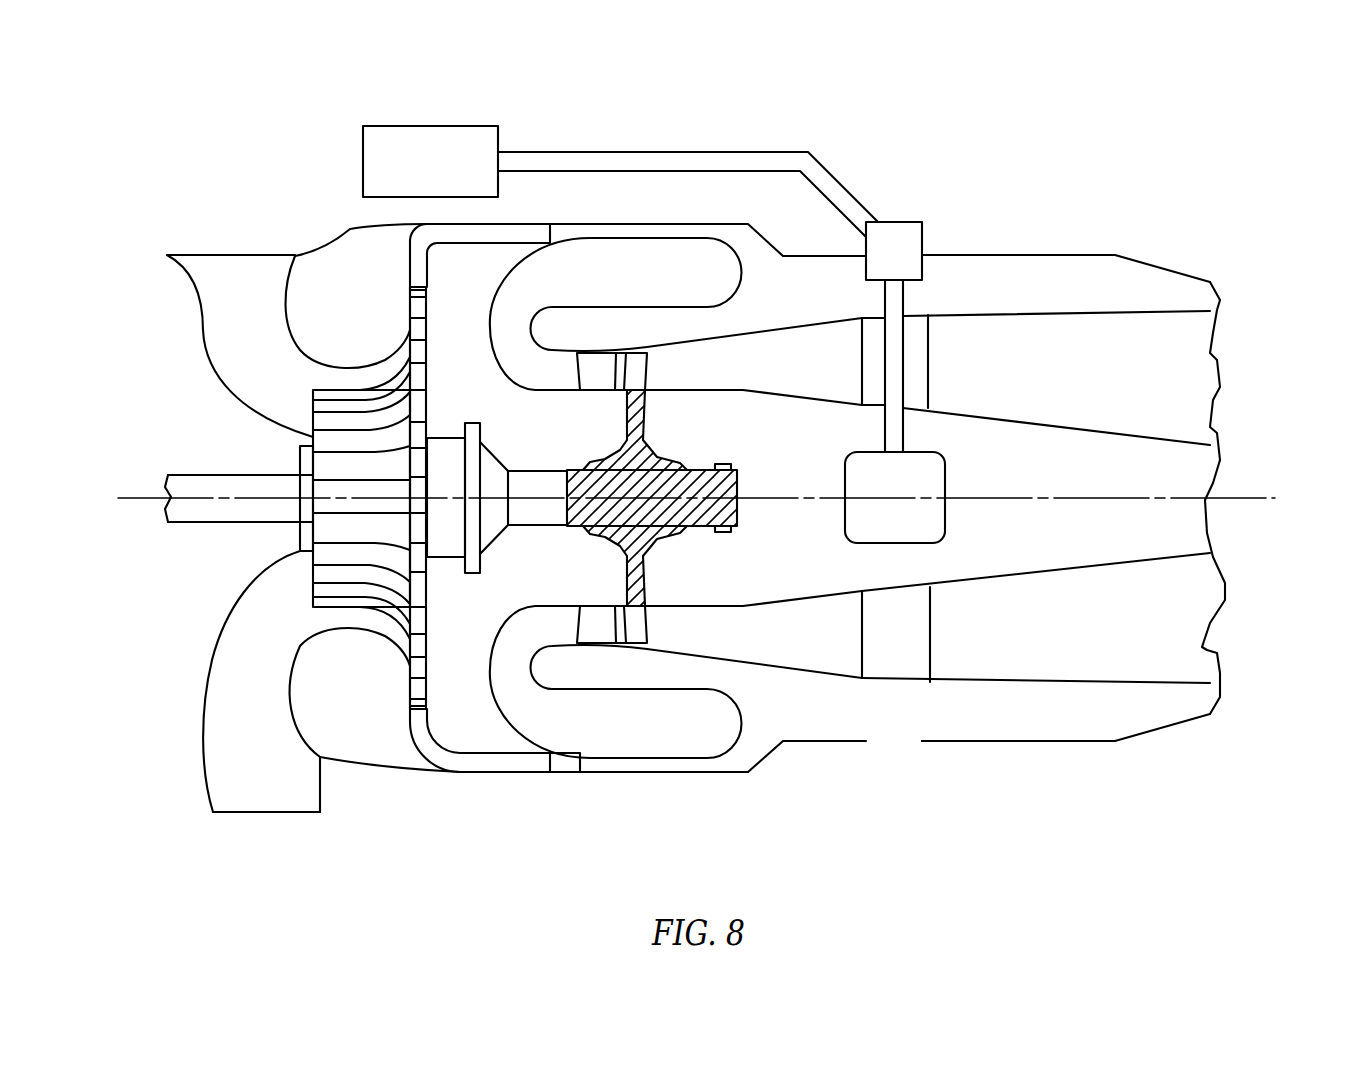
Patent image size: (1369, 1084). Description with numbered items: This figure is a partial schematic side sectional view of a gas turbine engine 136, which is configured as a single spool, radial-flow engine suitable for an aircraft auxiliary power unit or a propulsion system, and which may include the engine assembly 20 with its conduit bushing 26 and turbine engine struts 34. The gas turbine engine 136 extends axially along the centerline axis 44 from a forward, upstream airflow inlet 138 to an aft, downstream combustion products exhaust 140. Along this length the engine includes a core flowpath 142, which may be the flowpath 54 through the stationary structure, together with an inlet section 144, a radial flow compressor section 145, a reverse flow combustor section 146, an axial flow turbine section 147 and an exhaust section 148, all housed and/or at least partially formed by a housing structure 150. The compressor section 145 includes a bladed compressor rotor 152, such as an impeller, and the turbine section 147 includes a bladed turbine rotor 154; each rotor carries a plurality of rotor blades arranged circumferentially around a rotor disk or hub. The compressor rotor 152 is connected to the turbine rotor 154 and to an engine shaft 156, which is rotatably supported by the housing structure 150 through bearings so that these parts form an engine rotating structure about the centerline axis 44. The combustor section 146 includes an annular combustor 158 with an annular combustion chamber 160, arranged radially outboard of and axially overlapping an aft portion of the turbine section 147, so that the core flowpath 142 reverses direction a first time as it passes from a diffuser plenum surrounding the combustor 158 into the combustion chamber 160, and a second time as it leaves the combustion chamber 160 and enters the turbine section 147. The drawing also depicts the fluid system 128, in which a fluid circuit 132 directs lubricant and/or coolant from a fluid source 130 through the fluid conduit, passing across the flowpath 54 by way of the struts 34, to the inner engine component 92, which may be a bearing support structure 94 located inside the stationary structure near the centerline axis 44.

The engine assembly 20 is at (699, 471).
The conduit bushing 26 is at (948, 381).
The turbine engine struts 34 is at (945, 360).
The centerline axis 44 is at (1263, 500).
The flowpath 54 is at (336, 498).
The inner component 92 is at (948, 497).
The bearing support structure 94 is at (945, 478).
The fluid system 128 is at (692, 144).
The fluid source 130 is at (352, 160).
The fluid circuit 132 is at (826, 150).
The gas turbine engine 136 is at (203, 127).
The airflow inlet 138 is at (228, 255).
The combustion products exhaust 140 is at (1217, 363).
The core flowpath 142 is at (287, 373).
The inlet section 144 is at (185, 768).
The compressor section 145 is at (383, 672).
The combustor section 146 is at (642, 790).
The turbine section 147 is at (650, 658).
The exhaust section 148 is at (950, 752).
The housing structure 150 is at (748, 790).
The compressor rotor 152 is at (427, 405).
The turbine rotor 154 is at (645, 422).
The engine shaft 156 is at (537, 470).
The annular combustor 158 is at (605, 772).
The annular combustion chamber 160 is at (665, 290).